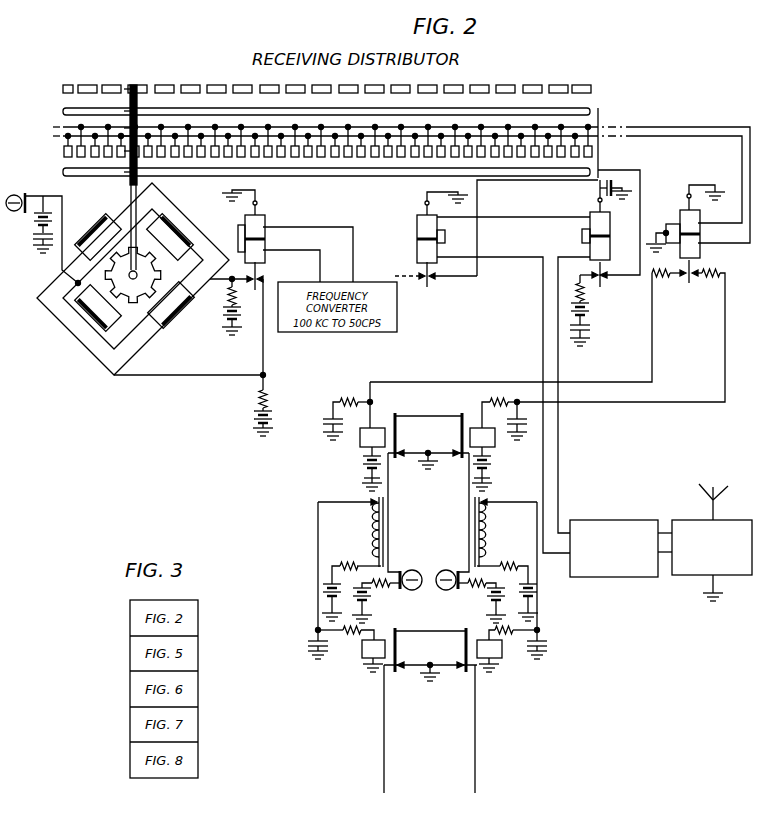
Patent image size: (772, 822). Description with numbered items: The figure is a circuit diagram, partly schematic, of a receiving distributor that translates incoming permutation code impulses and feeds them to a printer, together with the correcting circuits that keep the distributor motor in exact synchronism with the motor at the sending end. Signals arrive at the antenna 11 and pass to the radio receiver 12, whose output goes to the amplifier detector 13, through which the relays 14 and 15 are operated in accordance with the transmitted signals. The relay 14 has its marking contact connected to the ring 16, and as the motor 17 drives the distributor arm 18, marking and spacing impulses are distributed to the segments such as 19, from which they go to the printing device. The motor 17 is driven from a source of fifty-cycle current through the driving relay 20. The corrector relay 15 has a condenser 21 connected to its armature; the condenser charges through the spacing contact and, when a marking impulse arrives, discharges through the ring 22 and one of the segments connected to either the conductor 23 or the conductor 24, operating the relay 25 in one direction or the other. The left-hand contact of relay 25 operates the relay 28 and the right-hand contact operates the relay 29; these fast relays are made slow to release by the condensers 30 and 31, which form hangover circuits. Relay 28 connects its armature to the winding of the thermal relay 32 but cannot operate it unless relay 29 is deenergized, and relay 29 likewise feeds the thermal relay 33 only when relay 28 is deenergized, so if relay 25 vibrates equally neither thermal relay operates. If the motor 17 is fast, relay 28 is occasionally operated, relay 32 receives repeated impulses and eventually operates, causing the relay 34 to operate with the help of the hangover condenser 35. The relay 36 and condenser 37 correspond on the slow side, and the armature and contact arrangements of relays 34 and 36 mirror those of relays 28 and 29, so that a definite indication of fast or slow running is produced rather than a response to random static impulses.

The antenna 11 is at (720, 495).
The radio receiver 12 is at (697, 519).
The amplifier detector 13 is at (617, 505).
The relay 14 is at (417, 238).
The corrector relay 15 is at (610, 237).
The ring 16 is at (590, 110).
The motor 17 is at (133, 300).
The distributor arm 18 is at (129, 193).
The segments 19 is at (592, 89).
The driving relay 20 is at (281, 313).
The condenser 21 is at (603, 178).
The ring 22 is at (591, 170).
The conductor 23 is at (663, 126).
The conductor 24 is at (663, 134).
The relay 25 is at (698, 234).
The relay 28 is at (377, 428).
The relay 29 is at (477, 428).
The condenser 30 is at (332, 426).
The condenser 31 is at (528, 421).
The thermal relay 32 is at (384, 526).
The thermal relay 33 is at (474, 526).
The relay 34 is at (376, 640).
The condenser 35 is at (306, 642).
The relay 36 is at (481, 640).
The condenser 37 is at (549, 644).